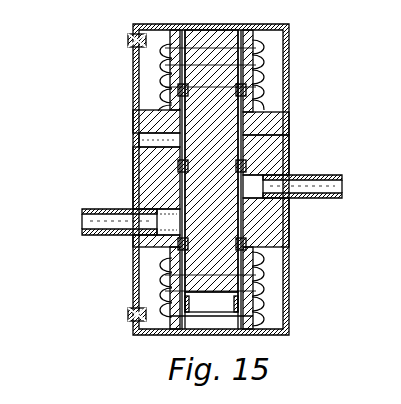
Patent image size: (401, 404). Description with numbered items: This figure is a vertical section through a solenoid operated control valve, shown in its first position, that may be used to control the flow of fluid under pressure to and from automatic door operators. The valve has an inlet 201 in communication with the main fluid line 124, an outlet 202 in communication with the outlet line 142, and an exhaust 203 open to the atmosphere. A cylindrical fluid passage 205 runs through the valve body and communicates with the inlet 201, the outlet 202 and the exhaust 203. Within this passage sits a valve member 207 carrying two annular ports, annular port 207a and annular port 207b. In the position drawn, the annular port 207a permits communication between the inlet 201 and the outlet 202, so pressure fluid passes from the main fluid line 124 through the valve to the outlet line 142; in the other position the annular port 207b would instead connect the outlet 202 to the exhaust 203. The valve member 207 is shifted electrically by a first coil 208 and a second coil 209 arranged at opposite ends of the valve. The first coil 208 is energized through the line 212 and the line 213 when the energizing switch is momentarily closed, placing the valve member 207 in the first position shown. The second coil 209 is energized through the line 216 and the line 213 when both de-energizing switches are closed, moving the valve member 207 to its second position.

The main fluid line 124 is at (105, 208).
The outlet line 142 is at (340, 176).
The inlet 201 is at (148, 233).
The outlet 202 is at (262, 178).
The exhaust 203 is at (137, 133).
The cylindrical fluid passage 205 is at (230, 212).
The valve member 207 is at (238, 226).
The annular port 207a is at (250, 240).
The annular port 207b is at (290, 128).
The first coil 208 is at (262, 62).
The second coil 209 is at (256, 295).
The line 212 is at (128, 40).
The line 213 is at (133, 177).
The line 216 is at (128, 315).